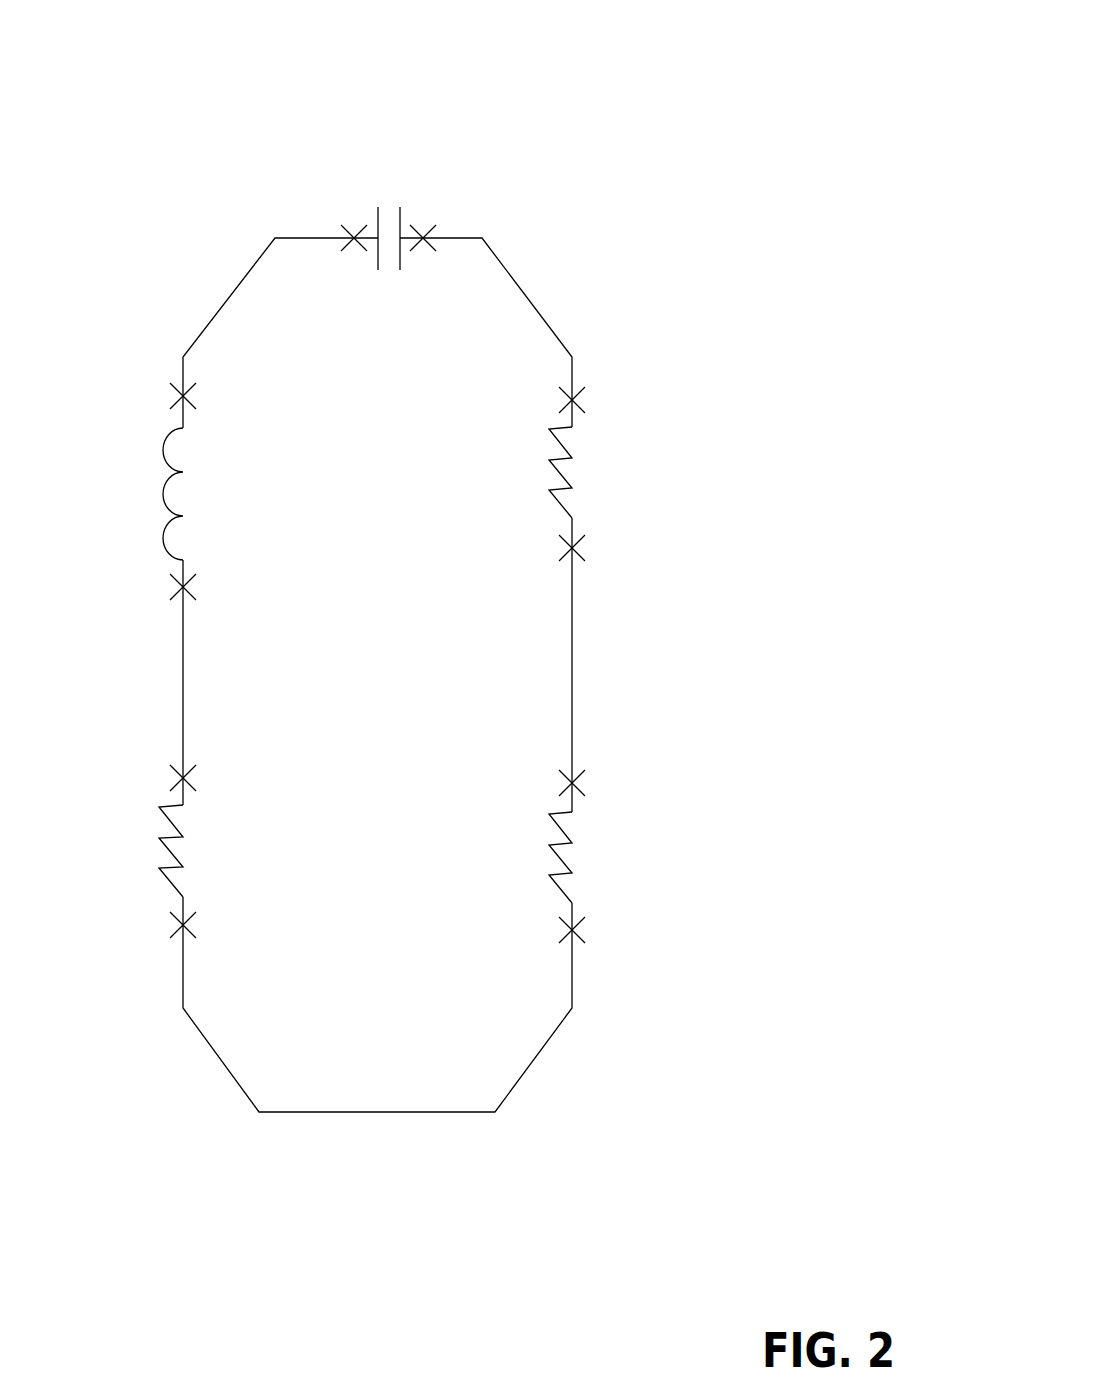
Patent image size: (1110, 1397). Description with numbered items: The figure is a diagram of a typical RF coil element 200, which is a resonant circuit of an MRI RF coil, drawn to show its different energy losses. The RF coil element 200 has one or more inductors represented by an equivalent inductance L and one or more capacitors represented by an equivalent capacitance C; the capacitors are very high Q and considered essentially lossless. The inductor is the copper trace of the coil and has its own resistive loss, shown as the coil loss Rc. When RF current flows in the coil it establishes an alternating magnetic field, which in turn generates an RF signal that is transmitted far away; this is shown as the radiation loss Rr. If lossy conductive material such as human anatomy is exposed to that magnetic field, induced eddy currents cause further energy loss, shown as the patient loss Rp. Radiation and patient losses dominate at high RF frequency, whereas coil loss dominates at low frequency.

The RF coil element 200 is at (436, 559).
The equivalent capacitance C is at (389, 261).
The equivalent inductance L is at (144, 494).
The patient loss Rp is at (590, 472).
The radiation loss Rr is at (588, 857).
The coil loss Rc is at (145, 851).